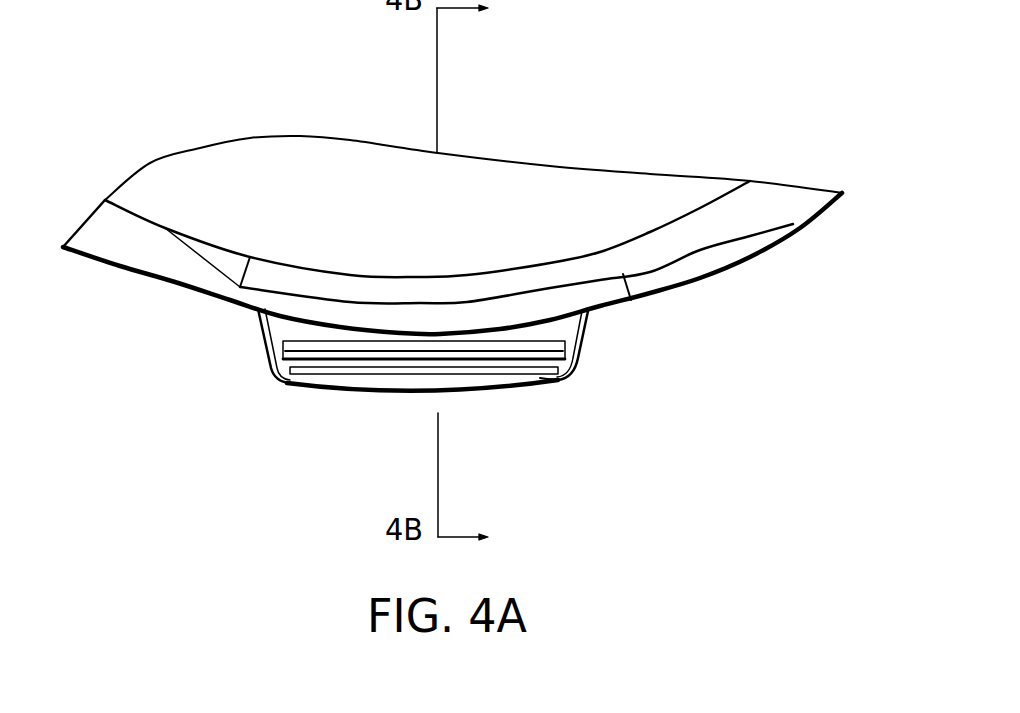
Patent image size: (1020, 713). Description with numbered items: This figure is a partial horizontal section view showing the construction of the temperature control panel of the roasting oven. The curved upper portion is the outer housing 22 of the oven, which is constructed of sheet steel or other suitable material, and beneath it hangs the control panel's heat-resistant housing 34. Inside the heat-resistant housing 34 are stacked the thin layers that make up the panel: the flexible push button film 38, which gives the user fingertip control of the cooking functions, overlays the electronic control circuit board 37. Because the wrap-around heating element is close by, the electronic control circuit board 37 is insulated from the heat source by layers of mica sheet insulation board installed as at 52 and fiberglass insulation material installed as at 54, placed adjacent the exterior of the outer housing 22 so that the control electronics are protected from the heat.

The outer housing 22 is at (672, 290).
The heat-resistant housing 34 is at (265, 362).
The electronic control circuit board 37 is at (315, 376).
The flexible push button film 38 is at (397, 397).
The mica sheet insulation board 52 is at (557, 385).
The fiberglass insulation material 54 is at (538, 346).